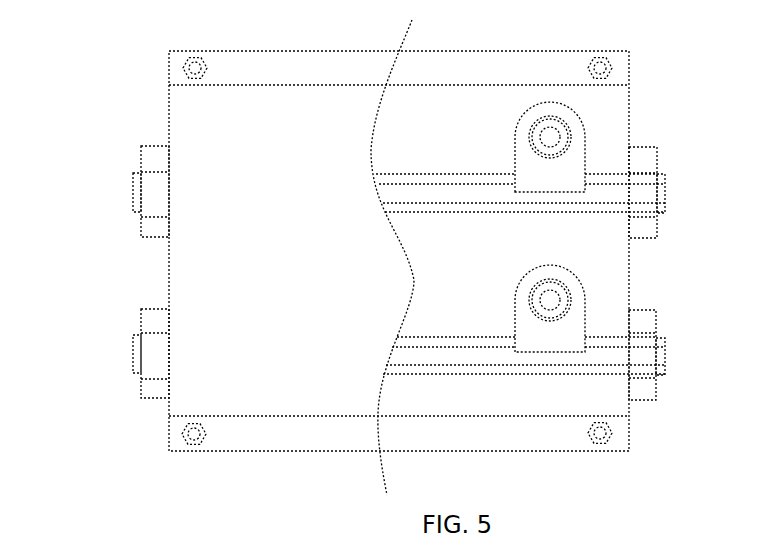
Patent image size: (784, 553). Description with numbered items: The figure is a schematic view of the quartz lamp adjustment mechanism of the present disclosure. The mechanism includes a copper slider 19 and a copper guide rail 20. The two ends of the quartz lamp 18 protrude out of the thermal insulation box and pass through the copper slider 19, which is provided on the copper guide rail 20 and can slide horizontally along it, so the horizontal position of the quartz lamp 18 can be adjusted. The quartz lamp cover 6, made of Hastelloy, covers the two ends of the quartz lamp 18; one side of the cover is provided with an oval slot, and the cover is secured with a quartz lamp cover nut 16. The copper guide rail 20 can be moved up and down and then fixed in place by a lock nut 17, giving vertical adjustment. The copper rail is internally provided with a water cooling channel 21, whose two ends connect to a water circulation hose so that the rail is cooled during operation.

The quartz lamp cover 6 is at (225, 372).
The quartz lamp cover nut 16 is at (193, 70).
The lock nut 17 is at (155, 189).
The quartz lamp 18 is at (553, 128).
The slider 19 is at (556, 170).
The guide rail 20 is at (582, 212).
The water cooling channel 21 is at (592, 358).